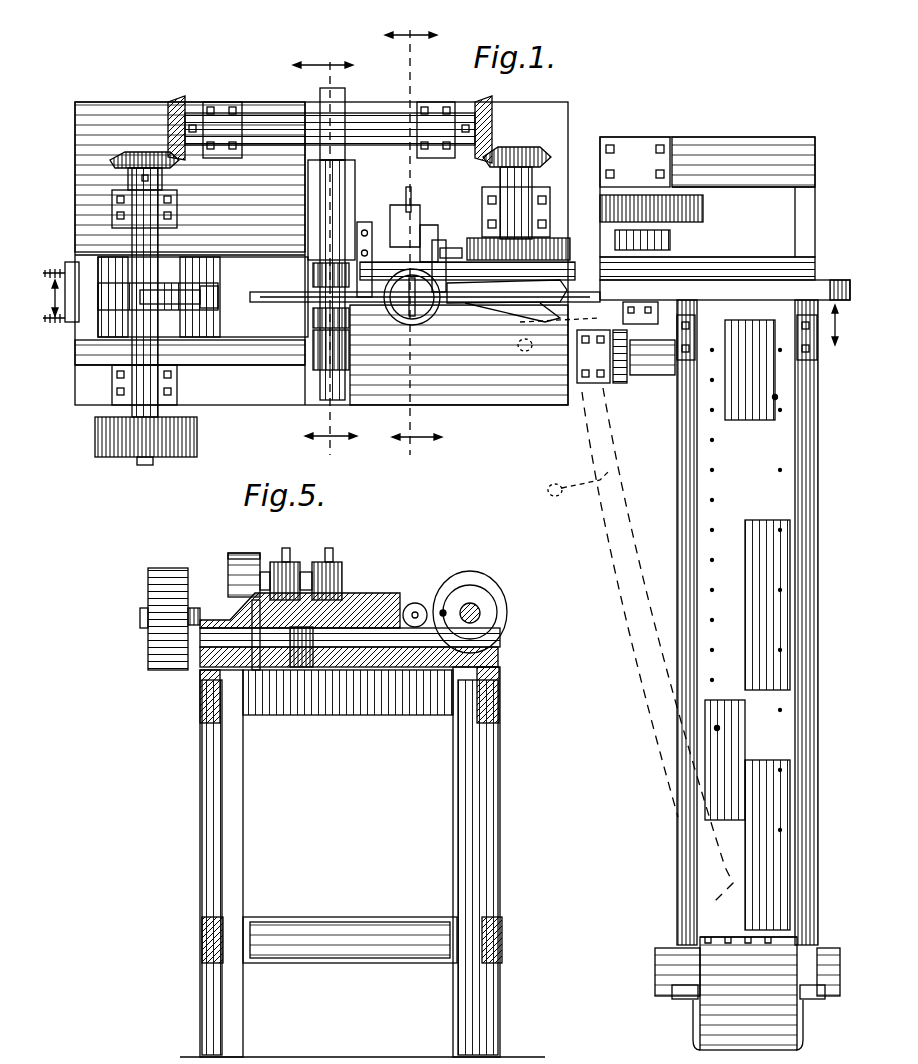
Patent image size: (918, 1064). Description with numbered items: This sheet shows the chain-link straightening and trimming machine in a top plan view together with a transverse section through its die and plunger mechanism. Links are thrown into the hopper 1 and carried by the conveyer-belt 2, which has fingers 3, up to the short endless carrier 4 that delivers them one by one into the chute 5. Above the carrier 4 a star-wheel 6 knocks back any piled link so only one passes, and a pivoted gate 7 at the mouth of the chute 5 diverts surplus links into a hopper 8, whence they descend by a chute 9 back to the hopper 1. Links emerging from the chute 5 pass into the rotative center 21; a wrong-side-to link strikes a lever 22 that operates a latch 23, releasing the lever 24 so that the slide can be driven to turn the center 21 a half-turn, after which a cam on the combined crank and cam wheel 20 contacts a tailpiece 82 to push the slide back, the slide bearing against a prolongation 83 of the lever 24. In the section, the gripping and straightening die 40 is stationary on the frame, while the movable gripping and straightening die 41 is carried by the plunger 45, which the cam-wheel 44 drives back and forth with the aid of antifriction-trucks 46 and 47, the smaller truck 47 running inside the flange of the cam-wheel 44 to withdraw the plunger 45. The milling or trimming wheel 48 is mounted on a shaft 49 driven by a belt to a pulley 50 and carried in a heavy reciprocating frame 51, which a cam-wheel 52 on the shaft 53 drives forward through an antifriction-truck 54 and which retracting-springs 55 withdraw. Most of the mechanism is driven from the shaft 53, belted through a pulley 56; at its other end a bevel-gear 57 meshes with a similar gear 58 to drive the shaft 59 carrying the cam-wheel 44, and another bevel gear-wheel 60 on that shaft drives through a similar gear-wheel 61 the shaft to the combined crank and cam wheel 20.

In FIG. 1, the hopper 1 is at (747, 993).
In FIG. 1, the conveyer-belt 2 is at (700, 448).
In FIG. 1, the fingers 3 is at (775, 397).
In FIG. 1, the short endless carrier 4 is at (447, 312).
In FIG. 1, the chute 5 is at (388, 253).
In FIG. 1, the star-wheel 6 is at (662, 292).
In FIG. 1, the pivoted gate 7 is at (700, 208).
In FIG. 1, the hopper 8 is at (527, 388).
In FIG. 1, the chute 9 is at (413, 236).
In FIG. 1, the combined crank and cam wheel 20 is at (522, 252).
In FIG. 1, the rotative center 21 is at (418, 308).
In FIG. 1, the lever 22 is at (438, 252).
In FIG. 1, the latch 23 is at (420, 227).
In FIG. 1, the lever 24 is at (371, 250).
In FIG. 5, the gripping and straightening die 40 is at (280, 670).
In FIG. 5, the gripping and straightening die 41 is at (333, 670).
In FIG. 1, the cam-wheel 44 is at (342, 96).
In FIG. 5, the cam-wheel 44 is at (477, 575).
In FIG. 1, the plunger 45 is at (330, 255).
In FIG. 5, the plunger 45 is at (378, 595).
In FIG. 5, the antifriction-truck 46 is at (417, 603).
In FIG. 5, the antifriction-truck 47 is at (444, 608).
In FIG. 1, the milling or trimming wheel 48 is at (308, 303).
In FIG. 5, the milling or trimming wheel 48 is at (305, 560).
In FIG. 5, the shaft 49 is at (228, 575).
In FIG. 1, the pulley 50 is at (327, 353).
In FIG. 5, the pulley 50 is at (242, 553).
In FIG. 1, the reciprocating frame 51 is at (203, 297).
In FIG. 5, the reciprocating frame 51 is at (335, 555).
In FIG. 1, the cam-wheel 52 is at (152, 300).
In FIG. 5, the cam-wheel 52 is at (305, 670).
In FIG. 1, the shaft 53 is at (155, 240).
In FIG. 5, the shaft 53 is at (140, 620).
In FIG. 1, the antifriction-truck 54 is at (200, 303).
In FIG. 1, the retracting-springs 55 is at (58, 262).
In FIG. 1, the pulley 56 is at (100, 425).
In FIG. 5, the pulley 56 is at (152, 572).
In FIG. 1, the bevel-gear 57 is at (130, 153).
In FIG. 1, the bevel-gear 58 is at (177, 97).
In FIG. 1, the shaft 59 is at (270, 123).
In FIG. 5, the shaft 59 is at (482, 613).
In FIG. 1, the bevel gear-wheel 60 is at (487, 96).
In FIG. 1, the bevel gear-wheel 61 is at (545, 152).
In FIG. 1, the tailpiece 82 is at (450, 252).
In FIG. 1, the prolongation 83 is at (403, 206).